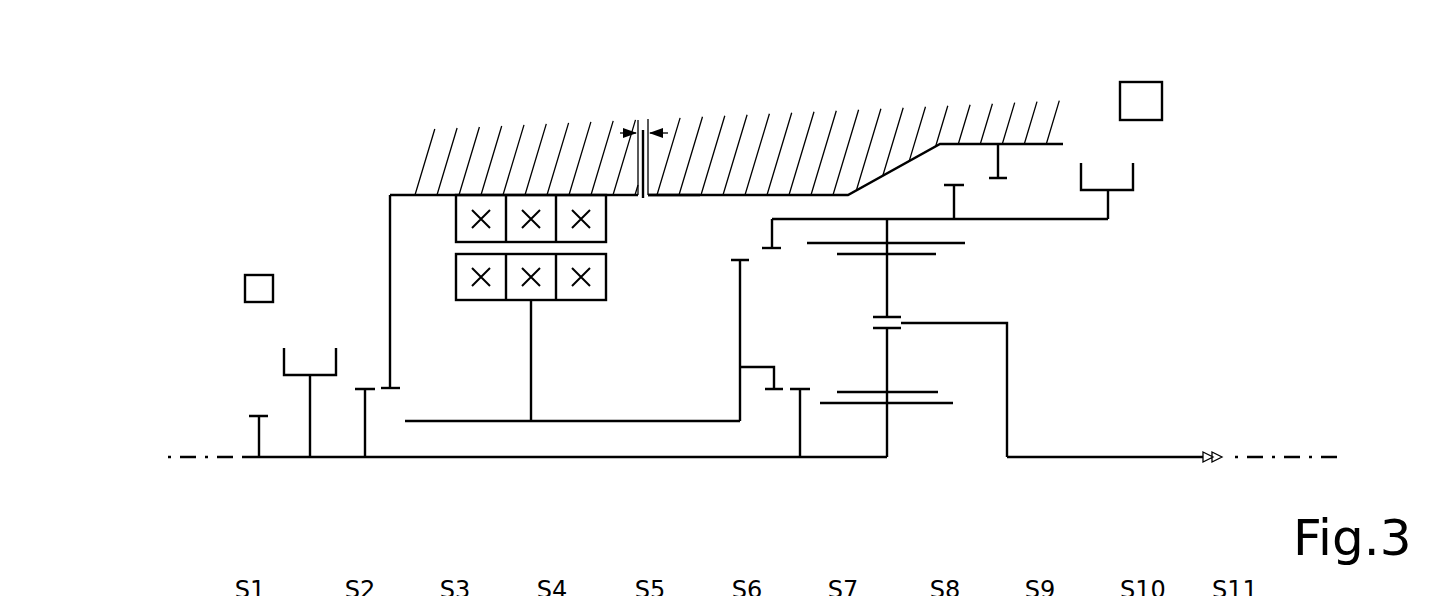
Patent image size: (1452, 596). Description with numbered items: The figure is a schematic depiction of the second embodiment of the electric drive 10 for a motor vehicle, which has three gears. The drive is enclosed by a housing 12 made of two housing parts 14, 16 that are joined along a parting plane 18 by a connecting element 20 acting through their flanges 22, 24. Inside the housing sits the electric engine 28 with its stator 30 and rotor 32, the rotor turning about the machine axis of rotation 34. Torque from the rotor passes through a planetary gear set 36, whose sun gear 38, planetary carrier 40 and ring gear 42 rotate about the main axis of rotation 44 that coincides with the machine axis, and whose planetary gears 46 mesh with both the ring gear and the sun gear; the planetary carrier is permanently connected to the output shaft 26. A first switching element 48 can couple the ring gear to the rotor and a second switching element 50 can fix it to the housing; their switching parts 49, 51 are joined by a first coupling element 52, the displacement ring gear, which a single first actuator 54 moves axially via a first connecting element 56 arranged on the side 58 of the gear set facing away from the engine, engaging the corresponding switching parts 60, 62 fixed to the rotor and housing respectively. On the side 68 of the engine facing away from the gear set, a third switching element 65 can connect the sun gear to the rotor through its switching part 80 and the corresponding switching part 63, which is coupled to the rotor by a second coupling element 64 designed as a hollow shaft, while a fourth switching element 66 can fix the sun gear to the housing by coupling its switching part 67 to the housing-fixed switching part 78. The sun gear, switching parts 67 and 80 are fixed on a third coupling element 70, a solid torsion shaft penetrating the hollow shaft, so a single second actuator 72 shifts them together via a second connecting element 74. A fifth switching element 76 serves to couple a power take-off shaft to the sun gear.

The electric drive 10 is at (1086, 82).
The housing 12 is at (701, 131).
The housing part 14 is at (818, 145).
The housing part 16 is at (483, 140).
The parting plane 18 is at (652, 172).
The connecting element 20 is at (645, 128).
The flange 22 is at (657, 184).
The flange 24 is at (636, 152).
The output shaft 26 is at (1115, 460).
The electric engine 28 is at (455, 312).
The stator 30 is at (608, 220).
The rotor 32 is at (608, 278).
The machine axis of rotation 34 is at (200, 460).
The planetary gear set 36 is at (860, 472).
The sun gear 38 is at (888, 426).
The planetary carrier 40 is at (1008, 367).
The ring gear 42 is at (958, 247).
The main axis of rotation 44 is at (1255, 460).
The planetary gear 46 is at (890, 292).
The first switching element 48 is at (773, 265).
The switching part 49 is at (776, 244).
The second switching element 50 is at (970, 203).
The switching part 51 is at (950, 205).
The first coupling element 52 is at (1092, 224).
The first actuator 54 is at (1163, 100).
The first connecting element 56 is at (1134, 175).
The side of the planetary gear set 58 is at (1082, 298).
The switching part 60 is at (738, 263).
The switching part 62 is at (1003, 176).
The switching part 63 is at (781, 389).
The second coupling element 64 is at (652, 418).
The third switching element 65 is at (807, 400).
The fourth switching element 66 is at (372, 391).
The switching part 67 is at (363, 392).
The side of the electric engine 68 is at (412, 252).
The third coupling element 70 is at (652, 460).
The second actuator 72 is at (245, 290).
The second connecting element 74 is at (284, 357).
The fifth switching element 76 is at (243, 430).
The switching part 78 is at (390, 378).
The switching part 80 is at (798, 393).